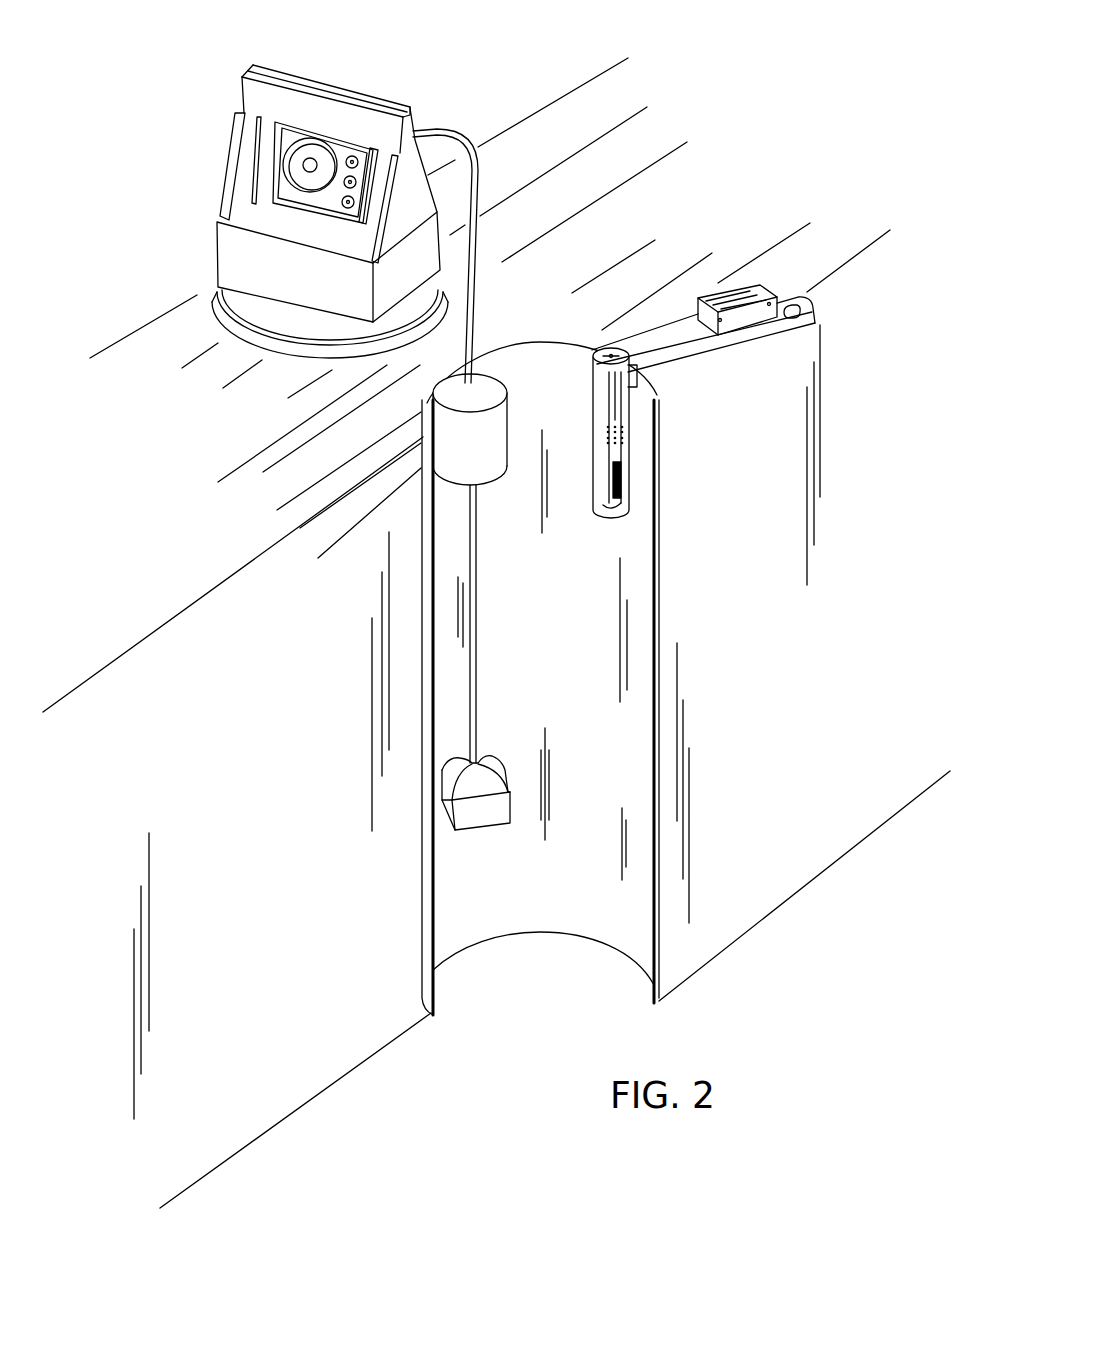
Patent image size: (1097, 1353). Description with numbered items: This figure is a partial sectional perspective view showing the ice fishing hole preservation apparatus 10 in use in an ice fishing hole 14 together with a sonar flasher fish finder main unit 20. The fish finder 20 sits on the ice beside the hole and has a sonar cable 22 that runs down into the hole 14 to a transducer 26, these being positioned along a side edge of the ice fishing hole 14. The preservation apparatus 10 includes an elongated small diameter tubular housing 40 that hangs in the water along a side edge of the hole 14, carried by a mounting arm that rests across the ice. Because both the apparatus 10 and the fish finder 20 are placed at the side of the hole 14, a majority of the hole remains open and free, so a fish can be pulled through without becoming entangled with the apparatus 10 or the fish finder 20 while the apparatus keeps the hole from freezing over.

The ice fishing hole preservation apparatus 10 is at (843, 318).
The ice fishing hole 14 is at (633, 548).
The sonar flasher fish finder main unit 20 is at (250, 262).
The sonar cable 22 is at (467, 143).
The transducer 26 is at (467, 817).
The elongated small diameter tubular housing 40 is at (630, 457).